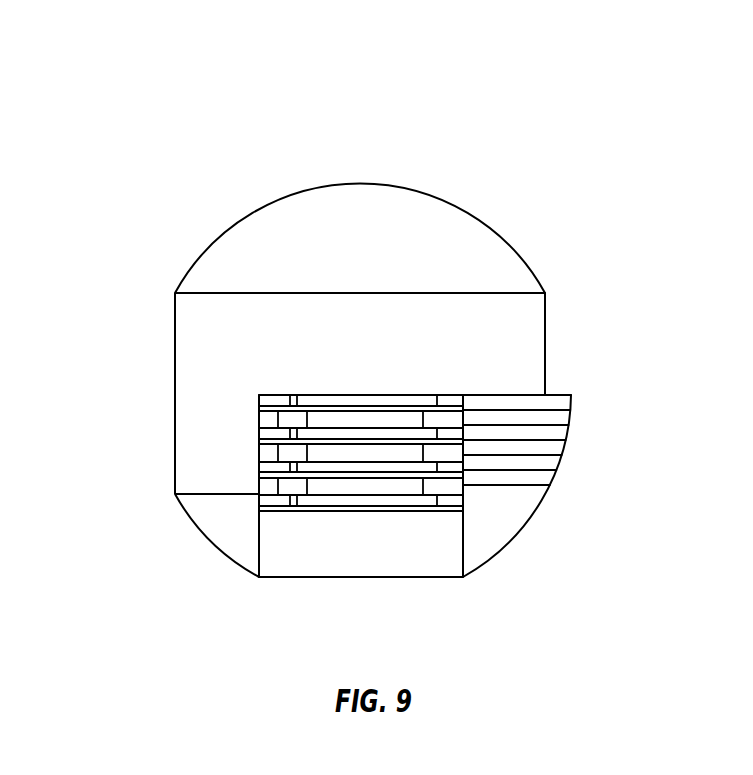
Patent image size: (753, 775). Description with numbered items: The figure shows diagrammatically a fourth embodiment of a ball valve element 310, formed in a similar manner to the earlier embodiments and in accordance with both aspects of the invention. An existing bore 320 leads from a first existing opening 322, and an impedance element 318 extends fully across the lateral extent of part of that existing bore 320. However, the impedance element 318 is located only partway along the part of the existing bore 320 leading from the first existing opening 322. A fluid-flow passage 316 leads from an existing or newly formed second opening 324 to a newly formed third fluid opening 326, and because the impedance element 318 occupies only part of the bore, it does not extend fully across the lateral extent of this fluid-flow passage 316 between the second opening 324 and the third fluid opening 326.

The ball valve element 310 is at (147, 163).
The fluid-flow passage 316 is at (523, 332).
The impedance element 318 is at (443, 483).
The existing bore 320 is at (285, 513).
The first existing opening 322 is at (418, 555).
The second opening 324 is at (203, 393).
The third fluid opening 326 is at (563, 462).